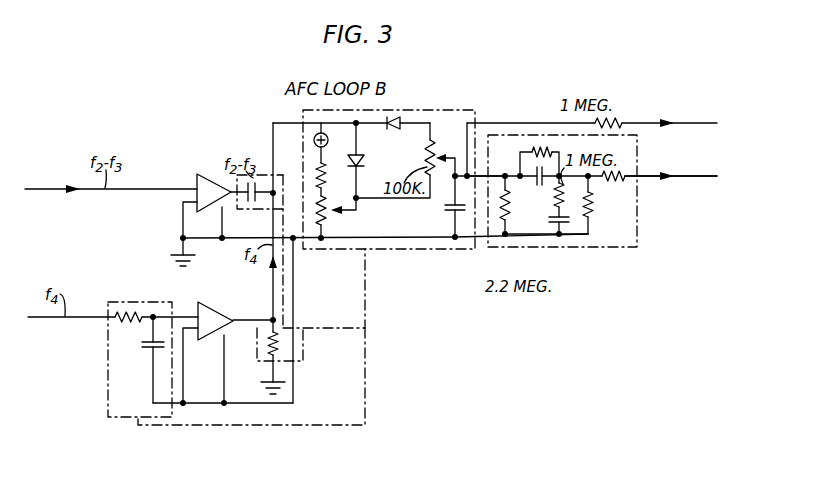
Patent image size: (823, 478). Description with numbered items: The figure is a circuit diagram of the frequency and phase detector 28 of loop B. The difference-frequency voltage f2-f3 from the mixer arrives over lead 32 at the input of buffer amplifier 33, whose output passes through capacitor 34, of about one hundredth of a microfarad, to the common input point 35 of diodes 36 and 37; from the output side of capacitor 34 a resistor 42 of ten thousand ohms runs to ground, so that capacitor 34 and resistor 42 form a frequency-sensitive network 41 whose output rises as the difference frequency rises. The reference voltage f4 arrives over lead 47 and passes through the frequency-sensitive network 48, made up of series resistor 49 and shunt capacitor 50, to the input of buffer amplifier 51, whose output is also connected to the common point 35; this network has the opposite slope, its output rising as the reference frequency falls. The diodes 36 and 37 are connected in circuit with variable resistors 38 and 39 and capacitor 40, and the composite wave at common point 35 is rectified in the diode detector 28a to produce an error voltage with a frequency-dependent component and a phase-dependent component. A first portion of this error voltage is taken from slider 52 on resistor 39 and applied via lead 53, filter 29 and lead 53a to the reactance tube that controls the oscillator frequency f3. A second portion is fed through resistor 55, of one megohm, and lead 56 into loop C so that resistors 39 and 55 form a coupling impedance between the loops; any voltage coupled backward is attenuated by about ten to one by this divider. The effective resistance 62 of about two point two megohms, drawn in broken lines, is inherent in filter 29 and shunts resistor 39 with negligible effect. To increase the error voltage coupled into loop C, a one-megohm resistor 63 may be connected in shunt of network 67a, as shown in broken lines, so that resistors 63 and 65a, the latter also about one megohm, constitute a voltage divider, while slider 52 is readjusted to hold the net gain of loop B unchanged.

The frequency and phase detector 28 is at (366, 329).
The diode detector 28a is at (377, 251).
The filter 29 is at (620, 249).
The lead 32 is at (52, 191).
The buffer amplifier 33 is at (205, 175).
The capacitor 34 is at (248, 208).
The common input point 35 is at (354, 124).
The diode 36 is at (389, 129).
The diode 37 is at (364, 163).
The variable resistor 38 is at (330, 223).
The variable resistor 39 is at (434, 150).
The capacitor 40 is at (456, 209).
The frequency-sensitive network 41 is at (285, 280).
The resistor 42 is at (270, 352).
The lead 47 is at (52, 318).
The frequency-sensitive network 48 is at (120, 302).
The series resistor 49 is at (119, 320).
The shunt capacitor 50 is at (143, 345).
The buffer amplifier 51 is at (229, 290).
The slider 52 is at (447, 163).
The lead 53 is at (484, 176).
The lead 53a is at (655, 180).
The resistor 55 is at (615, 118).
The lead 56 is at (490, 122).
The resistance 62 is at (510, 212).
The resistor 63 is at (594, 203).
The resistor 65a is at (553, 148).
The network 67a is at (540, 214).